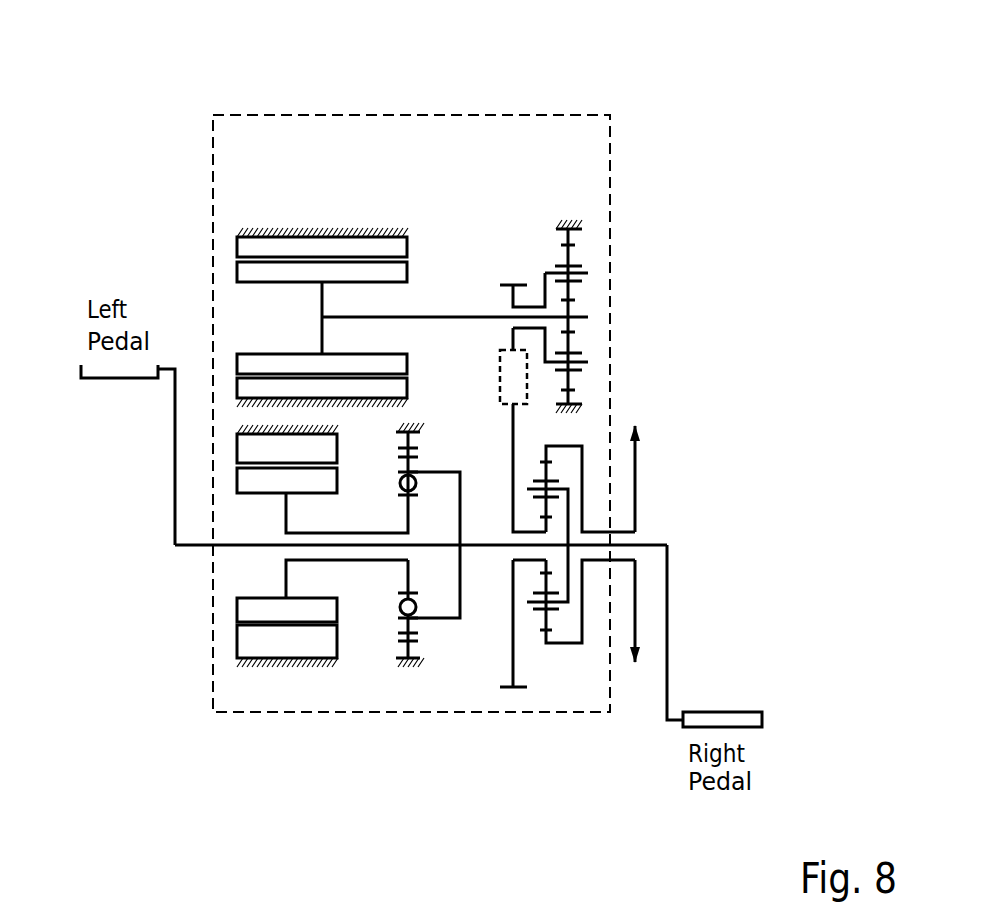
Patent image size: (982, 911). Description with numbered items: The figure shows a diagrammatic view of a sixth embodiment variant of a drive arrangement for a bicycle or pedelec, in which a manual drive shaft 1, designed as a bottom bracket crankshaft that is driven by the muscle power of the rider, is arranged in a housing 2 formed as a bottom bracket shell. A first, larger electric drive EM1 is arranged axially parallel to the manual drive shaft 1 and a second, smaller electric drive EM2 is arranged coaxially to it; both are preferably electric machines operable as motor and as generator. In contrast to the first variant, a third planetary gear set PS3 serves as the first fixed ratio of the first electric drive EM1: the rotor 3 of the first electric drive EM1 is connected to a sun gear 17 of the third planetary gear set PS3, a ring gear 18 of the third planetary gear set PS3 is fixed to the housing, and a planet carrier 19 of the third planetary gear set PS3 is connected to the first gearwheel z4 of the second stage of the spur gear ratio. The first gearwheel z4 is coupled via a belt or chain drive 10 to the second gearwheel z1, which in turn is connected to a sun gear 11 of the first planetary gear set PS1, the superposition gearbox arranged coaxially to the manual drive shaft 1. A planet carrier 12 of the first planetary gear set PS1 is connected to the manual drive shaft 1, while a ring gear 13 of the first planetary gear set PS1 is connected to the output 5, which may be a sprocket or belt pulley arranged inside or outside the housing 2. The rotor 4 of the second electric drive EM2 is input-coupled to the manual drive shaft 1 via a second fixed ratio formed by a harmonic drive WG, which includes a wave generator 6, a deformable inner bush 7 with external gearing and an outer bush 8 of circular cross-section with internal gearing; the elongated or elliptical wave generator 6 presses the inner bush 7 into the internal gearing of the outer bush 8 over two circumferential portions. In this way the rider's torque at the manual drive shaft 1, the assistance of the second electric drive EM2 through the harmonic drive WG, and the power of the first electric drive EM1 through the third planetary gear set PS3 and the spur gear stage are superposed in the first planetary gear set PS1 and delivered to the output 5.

The first electric drive EM1 is at (288, 222).
The second electric drive EM2 is at (252, 672).
The manual drive shaft 1 is at (235, 547).
The housing 2 is at (213, 653).
The rotor 3 is at (507, 297).
The rotor 4 is at (284, 510).
The output 5 is at (638, 488).
The wave generator 6 is at (407, 578).
The inner bush 7 is at (415, 625).
The outer bush 8 is at (413, 652).
The belt or chain drive 10 is at (518, 380).
The sun gear 11 is at (548, 522).
The planet carrier 12 is at (570, 487).
The ring gear 13 is at (548, 447).
The sun gear 17 is at (570, 314).
The ring gear 18 is at (570, 238).
The planet carrier 19 is at (545, 270).
The second gearwheel z1 is at (516, 663).
The first gearwheel z4 is at (442, 317).
The harmonic drive WG is at (408, 671).
The first planetary gear set PS1 is at (552, 648).
The third planetary gear set PS3 is at (568, 215).